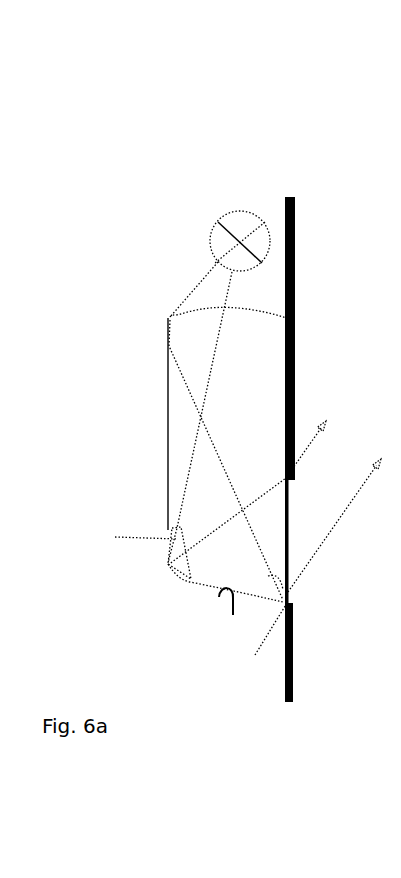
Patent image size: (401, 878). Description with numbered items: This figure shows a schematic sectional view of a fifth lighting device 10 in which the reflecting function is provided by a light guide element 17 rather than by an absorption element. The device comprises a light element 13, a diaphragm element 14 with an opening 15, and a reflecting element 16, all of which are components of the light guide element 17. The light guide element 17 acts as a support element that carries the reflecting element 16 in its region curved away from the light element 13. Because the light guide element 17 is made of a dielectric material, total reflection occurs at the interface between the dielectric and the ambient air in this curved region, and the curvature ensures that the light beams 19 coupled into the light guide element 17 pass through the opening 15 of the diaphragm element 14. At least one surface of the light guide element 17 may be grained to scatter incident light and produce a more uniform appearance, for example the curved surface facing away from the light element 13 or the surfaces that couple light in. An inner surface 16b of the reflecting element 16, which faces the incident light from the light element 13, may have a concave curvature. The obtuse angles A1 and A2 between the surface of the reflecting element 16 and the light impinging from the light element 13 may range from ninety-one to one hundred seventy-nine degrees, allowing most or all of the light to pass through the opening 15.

The lighting device 10 is at (245, 77).
The light element 13 is at (203, 232).
The diaphragm element 14 is at (300, 248).
The opening 15 is at (302, 529).
The reflecting element 16 is at (192, 589).
The inner surface 16b is at (232, 614).
The light guide element 17 is at (156, 417).
The light beams 19 is at (328, 551).
The obtuse angle A1 is at (127, 541).
The obtuse angle A2 is at (262, 645).